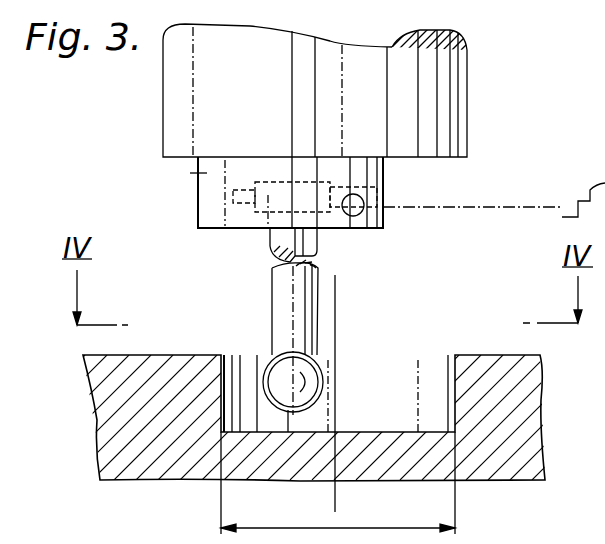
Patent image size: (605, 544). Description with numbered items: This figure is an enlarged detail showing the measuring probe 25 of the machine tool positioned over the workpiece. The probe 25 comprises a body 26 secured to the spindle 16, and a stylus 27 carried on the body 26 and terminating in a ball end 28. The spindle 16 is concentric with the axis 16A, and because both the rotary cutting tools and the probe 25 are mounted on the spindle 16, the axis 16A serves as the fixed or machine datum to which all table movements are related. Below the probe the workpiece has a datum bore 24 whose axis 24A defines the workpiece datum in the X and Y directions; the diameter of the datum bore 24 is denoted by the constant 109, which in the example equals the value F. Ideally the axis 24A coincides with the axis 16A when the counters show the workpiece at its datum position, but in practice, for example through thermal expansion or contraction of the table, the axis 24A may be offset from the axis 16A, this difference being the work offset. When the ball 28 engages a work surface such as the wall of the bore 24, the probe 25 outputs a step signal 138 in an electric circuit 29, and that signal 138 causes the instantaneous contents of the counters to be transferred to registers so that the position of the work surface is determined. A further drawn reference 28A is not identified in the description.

The spindle 16 is at (470, 100).
The axis of the spindle 16A is at (320, 32).
The probe 25 is at (197, 198).
The body 26 is at (198, 173).
The electric circuit 29 is at (452, 200).
The step signal 138 is at (583, 187).
The stylus 27 is at (272, 282).
The pin centerline 28A is at (293, 320).
The axis of the datum bore 24A is at (336, 300).
The ball end 28 is at (333, 368).
The datum bore 24 is at (446, 362).
The diameter of datum bore 109 is at (338, 483).